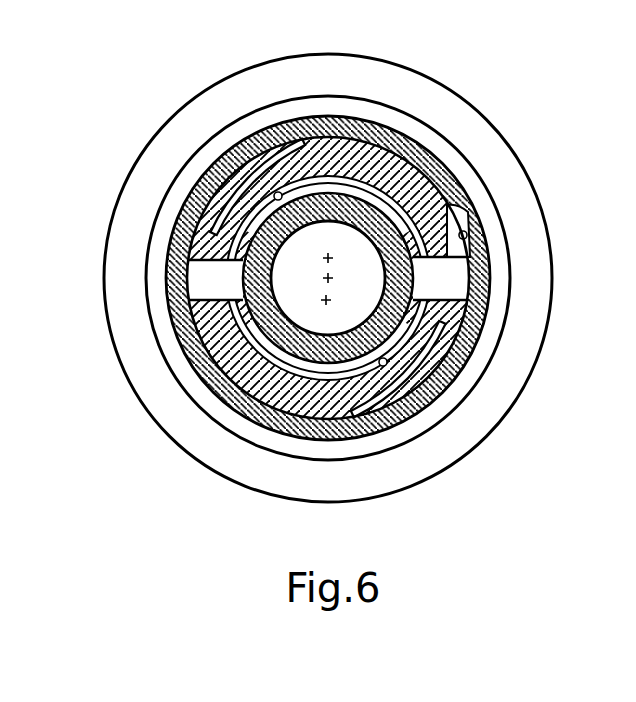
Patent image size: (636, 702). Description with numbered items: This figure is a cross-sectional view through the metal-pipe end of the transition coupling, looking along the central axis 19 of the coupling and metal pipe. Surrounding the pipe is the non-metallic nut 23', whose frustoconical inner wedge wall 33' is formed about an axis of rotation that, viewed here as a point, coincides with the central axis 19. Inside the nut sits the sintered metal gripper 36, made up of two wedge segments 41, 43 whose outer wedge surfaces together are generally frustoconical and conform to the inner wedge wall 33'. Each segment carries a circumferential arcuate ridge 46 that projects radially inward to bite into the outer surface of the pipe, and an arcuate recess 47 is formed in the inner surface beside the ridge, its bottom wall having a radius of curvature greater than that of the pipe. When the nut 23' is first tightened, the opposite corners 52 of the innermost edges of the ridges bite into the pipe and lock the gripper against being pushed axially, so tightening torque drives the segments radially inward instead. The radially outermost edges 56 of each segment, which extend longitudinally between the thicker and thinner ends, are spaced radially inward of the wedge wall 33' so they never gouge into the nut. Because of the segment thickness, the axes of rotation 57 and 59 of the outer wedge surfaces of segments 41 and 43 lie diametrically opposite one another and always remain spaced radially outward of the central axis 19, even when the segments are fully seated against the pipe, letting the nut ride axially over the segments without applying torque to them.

The central axis 19 is at (349, 280).
The nut 23' is at (335, 278).
The inner wedge wall 33' is at (420, 278).
The gripper 36 is at (460, 198).
The wedge segment 41 is at (360, 150).
The wedge segment 43 is at (380, 440).
The arcuate ridge 46 is at (232, 148).
The arcuate recess 47 is at (300, 140).
The corners 52 is at (241, 286).
The radially outermost edges 56 is at (187, 262).
The axis of rotation 57 is at (328, 256).
The axis of rotation 59 is at (323, 302).